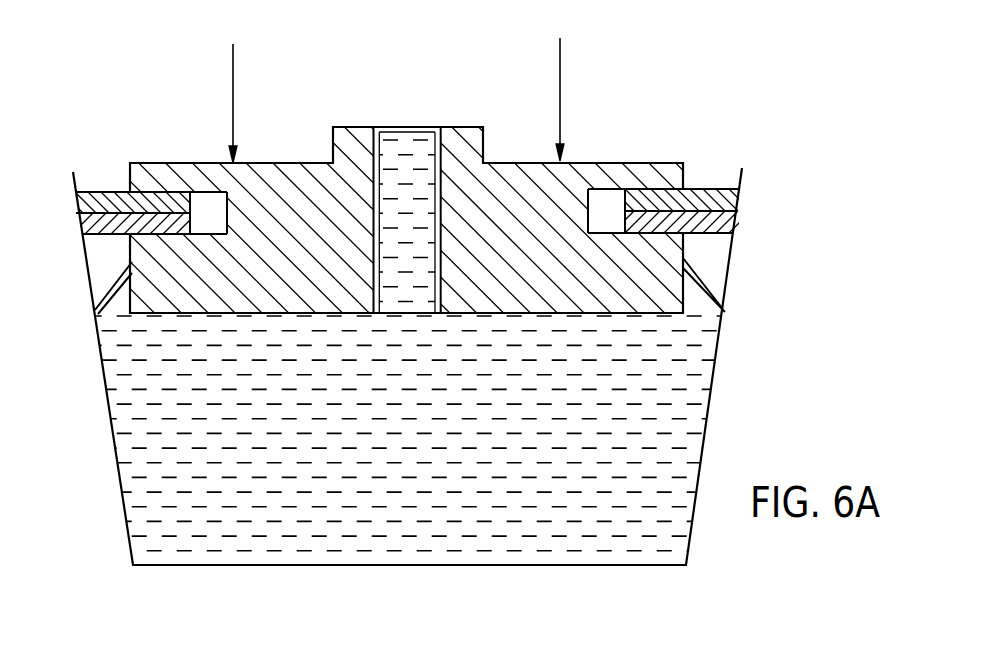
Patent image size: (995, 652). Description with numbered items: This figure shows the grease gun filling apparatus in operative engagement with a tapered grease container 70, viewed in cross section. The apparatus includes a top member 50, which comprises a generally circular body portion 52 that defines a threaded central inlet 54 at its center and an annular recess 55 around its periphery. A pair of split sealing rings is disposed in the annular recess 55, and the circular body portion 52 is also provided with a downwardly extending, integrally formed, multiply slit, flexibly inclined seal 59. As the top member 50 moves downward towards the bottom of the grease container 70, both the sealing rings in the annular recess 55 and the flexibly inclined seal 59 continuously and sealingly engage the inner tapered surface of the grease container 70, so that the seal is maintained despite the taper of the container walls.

The top member 50 is at (603, 160).
The circular body portion 52 is at (297, 176).
The threaded central inlet 54 is at (383, 147).
The annular recess 55 is at (207, 207).
The flexibly inclined seal 59 is at (112, 282).
The grease container 70 is at (76, 179).